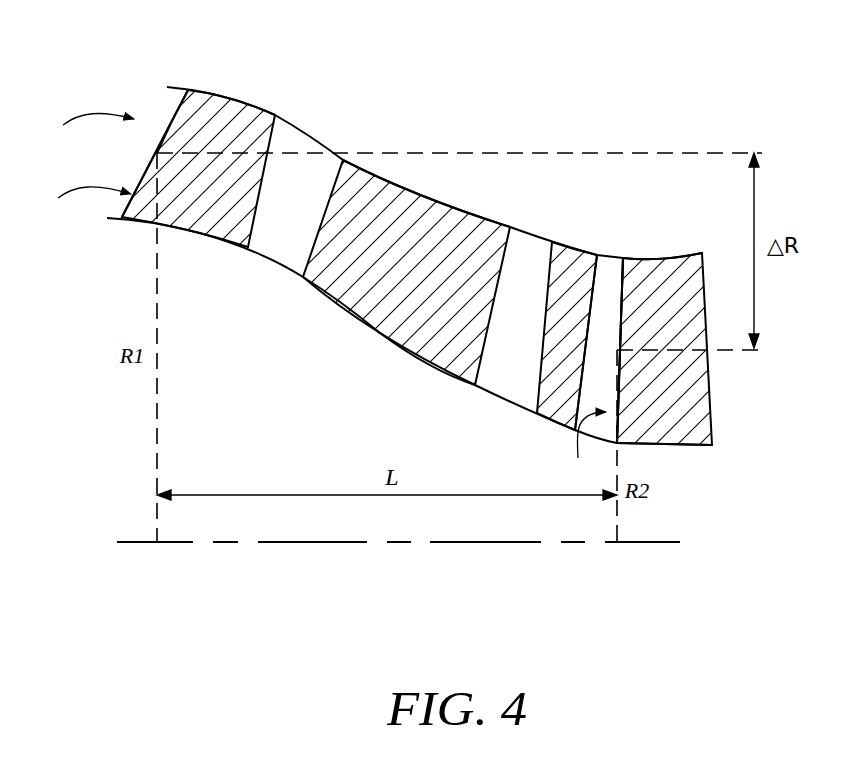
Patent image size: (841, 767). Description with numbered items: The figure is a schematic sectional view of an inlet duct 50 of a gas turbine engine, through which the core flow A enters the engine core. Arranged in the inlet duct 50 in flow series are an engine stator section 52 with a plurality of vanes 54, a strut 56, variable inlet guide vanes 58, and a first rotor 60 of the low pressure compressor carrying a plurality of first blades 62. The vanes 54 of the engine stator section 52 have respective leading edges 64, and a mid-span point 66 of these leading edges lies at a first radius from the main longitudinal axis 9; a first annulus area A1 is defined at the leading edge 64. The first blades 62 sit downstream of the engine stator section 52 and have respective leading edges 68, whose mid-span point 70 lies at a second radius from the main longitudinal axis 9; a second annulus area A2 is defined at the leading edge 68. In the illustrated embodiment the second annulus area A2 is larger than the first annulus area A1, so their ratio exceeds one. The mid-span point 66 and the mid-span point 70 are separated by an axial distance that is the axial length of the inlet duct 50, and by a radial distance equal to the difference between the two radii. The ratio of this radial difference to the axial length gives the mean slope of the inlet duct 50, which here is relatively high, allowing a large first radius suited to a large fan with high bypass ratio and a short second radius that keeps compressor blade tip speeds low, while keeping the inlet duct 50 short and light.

The main longitudinal axis 9 is at (662, 542).
The inlet duct 50 is at (357, 133).
The engine stator section 52 is at (243, 82).
The vanes 54 is at (198, 200).
The strut 56 is at (406, 278).
The variable inlet guide vanes 58 is at (555, 315).
The first rotor 60 is at (662, 244).
The first blades 62 is at (648, 398).
The leading edges 64 is at (175, 117).
The mid-span point 66 is at (157, 153).
The leading edges 68 is at (623, 277).
The mid-span point 70 is at (617, 350).
The core flow A is at (88, 123).
The first annulus area A1 is at (78, 198).
The second annulus area A2 is at (582, 450).